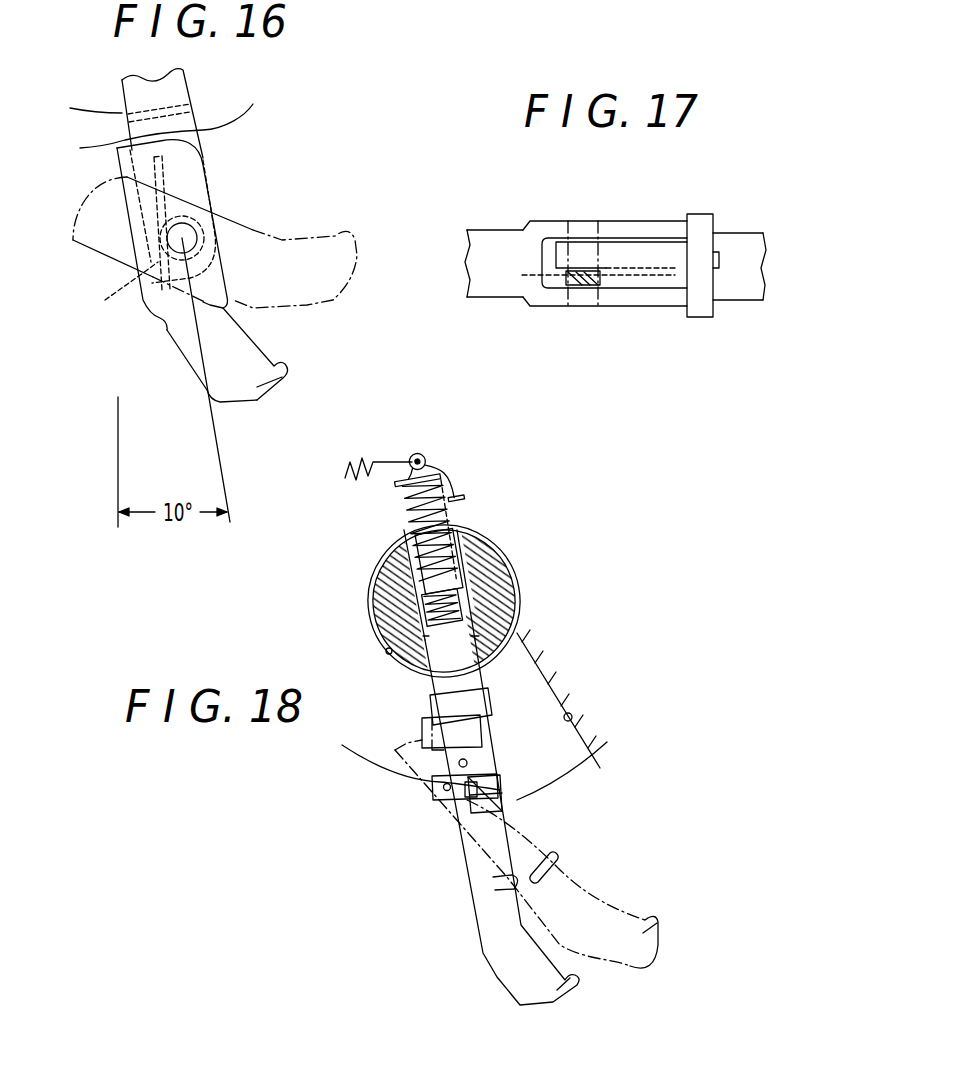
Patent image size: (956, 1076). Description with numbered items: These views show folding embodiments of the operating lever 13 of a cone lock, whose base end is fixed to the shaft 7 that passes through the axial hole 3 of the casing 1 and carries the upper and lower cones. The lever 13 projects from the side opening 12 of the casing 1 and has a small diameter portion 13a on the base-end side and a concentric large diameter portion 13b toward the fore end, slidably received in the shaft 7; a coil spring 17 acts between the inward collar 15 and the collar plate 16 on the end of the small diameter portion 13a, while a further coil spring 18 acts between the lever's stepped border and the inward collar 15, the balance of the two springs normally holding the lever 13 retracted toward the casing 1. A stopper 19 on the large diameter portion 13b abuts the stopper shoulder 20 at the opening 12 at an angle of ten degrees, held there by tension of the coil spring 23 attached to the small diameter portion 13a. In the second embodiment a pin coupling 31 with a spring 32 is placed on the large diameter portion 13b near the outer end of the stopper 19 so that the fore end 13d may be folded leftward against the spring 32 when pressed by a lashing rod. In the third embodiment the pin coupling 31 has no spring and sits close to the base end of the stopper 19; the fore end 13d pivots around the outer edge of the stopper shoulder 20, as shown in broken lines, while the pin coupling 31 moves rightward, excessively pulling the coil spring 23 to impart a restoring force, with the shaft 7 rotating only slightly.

In FIG. 18, the casing 1 is at (555, 682).
In FIG. 18, the axial hole 3 is at (388, 655).
In FIG. 18, the shaft 7 is at (375, 620).
In FIG. 18, the opening 12 is at (572, 714).
In FIG. 16, the lever 13 is at (154, 366).
In FIG. 17, the lever 13 is at (644, 301).
In FIG. 18, the lever 13 is at (451, 822).
In FIG. 18, the small diameter portion 13a is at (403, 587).
In FIG. 16, the large diameter portion 13b is at (165, 341).
In FIG. 17, the large diameter portion 13b is at (648, 311).
In FIG. 18, the large diameter portion 13b is at (457, 861).
In FIG. 16, the fore end 13d is at (238, 345).
In FIG. 17, the fore end 13d is at (492, 248).
In FIG. 18, the fore end 13d is at (500, 955).
In FIG. 18, the inward collar 15 is at (430, 582).
In FIG. 18, the collar plate 16 is at (424, 466).
In FIG. 18, the coil spring 17 is at (448, 527).
In FIG. 18, the coil spring 18 is at (462, 615).
In FIG. 16, the stopper 19 is at (194, 118).
In FIG. 17, the stopper 19 is at (704, 223).
In FIG. 18, the stopper 19 is at (500, 790).
In FIG. 16, the stopper shoulder 20 is at (151, 134).
In FIG. 18, the stopper shoulder 20 is at (517, 800).
In FIG. 18, the coil spring 23 is at (347, 462).
In FIG. 16, the pin coupling 31 is at (236, 208).
In FIG. 17, the pin coupling 31 is at (554, 209).
In FIG. 18, the pin coupling 31 is at (411, 798).
In FIG. 16, the spring 32 is at (117, 289).
In FIG. 17, the spring 32 is at (583, 291).